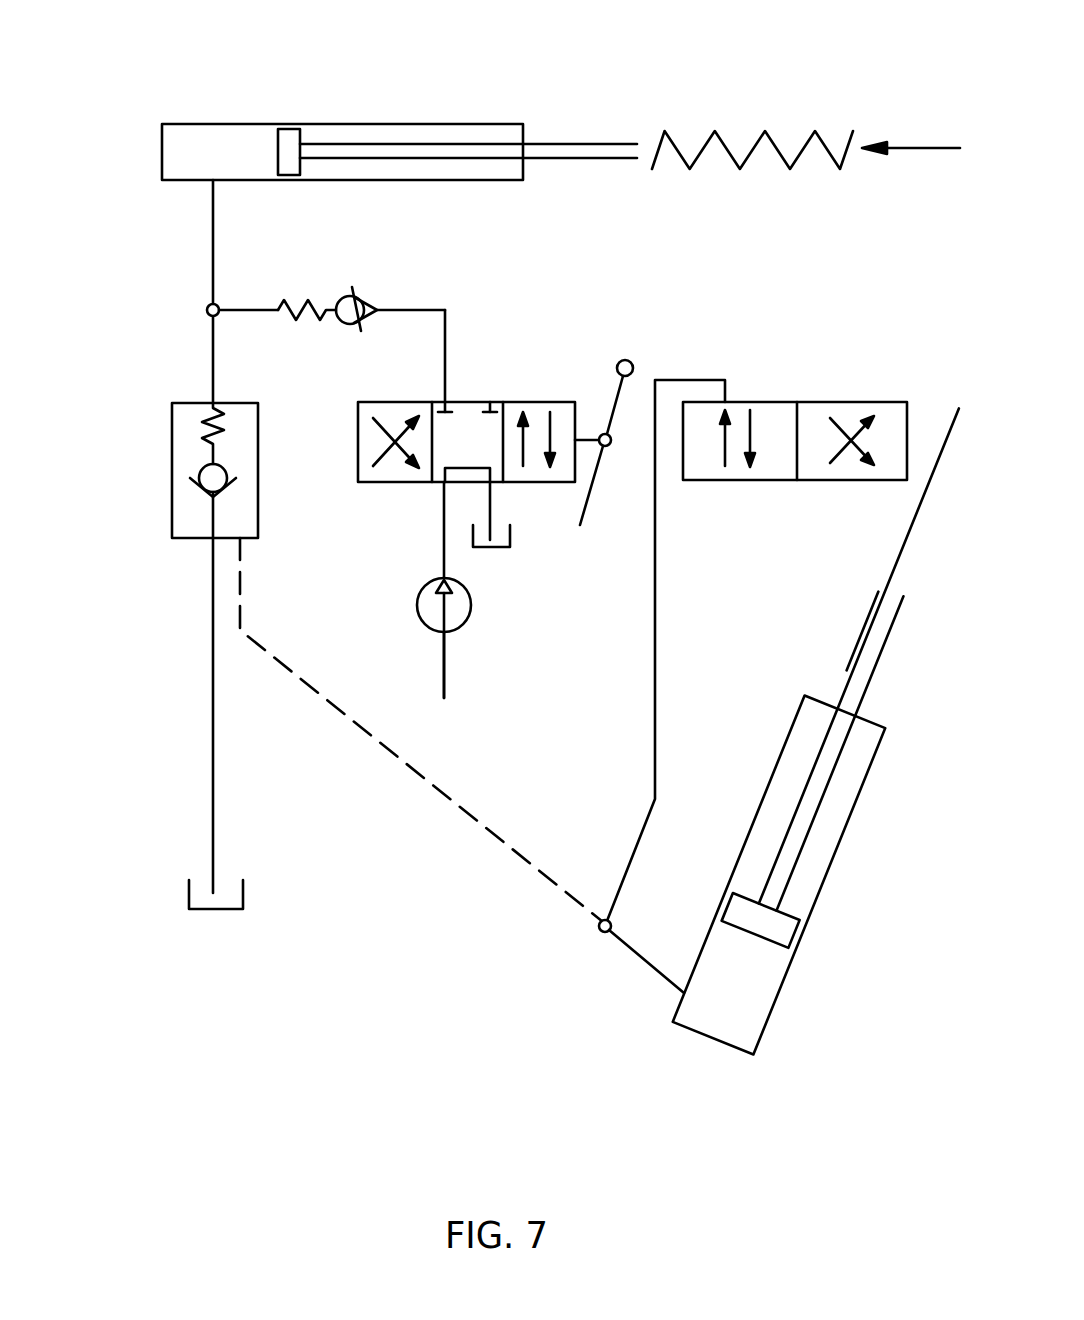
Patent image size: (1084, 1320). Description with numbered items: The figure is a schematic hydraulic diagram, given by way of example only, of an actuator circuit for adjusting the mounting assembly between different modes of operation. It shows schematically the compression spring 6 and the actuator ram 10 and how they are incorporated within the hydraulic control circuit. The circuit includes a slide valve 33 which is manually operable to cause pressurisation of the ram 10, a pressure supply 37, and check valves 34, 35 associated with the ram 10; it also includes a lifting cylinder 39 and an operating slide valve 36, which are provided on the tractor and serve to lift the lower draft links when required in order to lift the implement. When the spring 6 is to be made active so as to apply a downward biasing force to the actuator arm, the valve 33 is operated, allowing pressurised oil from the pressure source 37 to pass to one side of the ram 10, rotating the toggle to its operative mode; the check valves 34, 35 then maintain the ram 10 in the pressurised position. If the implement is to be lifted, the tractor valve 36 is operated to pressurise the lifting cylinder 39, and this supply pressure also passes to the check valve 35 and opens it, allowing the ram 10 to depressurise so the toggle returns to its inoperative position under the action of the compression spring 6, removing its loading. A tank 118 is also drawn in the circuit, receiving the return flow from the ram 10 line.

The actuator ram 10 is at (222, 132).
The compression spring 6 is at (795, 138).
The check valve 34 is at (362, 288).
The check valve 35 is at (178, 523).
The slide valve 33 is at (542, 407).
The operating slide valve 36 is at (768, 403).
The pressure supply 37 is at (460, 618).
The tank 118 is at (222, 910).
The lifting cylinder 39 is at (720, 1025).